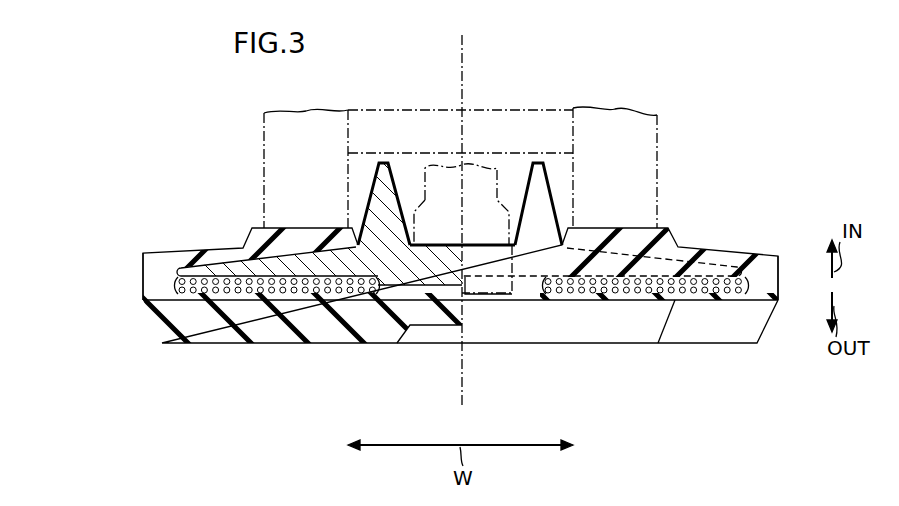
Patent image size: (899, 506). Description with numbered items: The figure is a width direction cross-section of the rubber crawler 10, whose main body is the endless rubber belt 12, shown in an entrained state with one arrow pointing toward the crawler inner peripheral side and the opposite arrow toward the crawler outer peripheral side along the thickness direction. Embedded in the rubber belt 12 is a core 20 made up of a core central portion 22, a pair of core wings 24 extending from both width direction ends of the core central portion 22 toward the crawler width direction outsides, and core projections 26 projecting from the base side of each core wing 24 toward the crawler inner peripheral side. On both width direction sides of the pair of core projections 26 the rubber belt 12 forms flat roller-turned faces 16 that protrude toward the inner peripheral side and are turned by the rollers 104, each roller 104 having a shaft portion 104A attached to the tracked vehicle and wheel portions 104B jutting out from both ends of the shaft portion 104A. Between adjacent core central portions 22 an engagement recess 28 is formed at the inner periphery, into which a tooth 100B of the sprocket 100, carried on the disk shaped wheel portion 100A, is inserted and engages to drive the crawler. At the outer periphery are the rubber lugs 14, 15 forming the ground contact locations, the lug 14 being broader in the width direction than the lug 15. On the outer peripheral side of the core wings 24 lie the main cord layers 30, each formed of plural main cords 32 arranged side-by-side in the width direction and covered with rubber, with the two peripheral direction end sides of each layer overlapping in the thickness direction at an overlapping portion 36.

The rubber crawler 10 is at (226, 224).
The rubber belt 12 is at (779, 259).
The lug 14 is at (318, 344).
The lug 15 is at (665, 344).
The roller-turned face 16 is at (272, 228).
The core 20 is at (418, 299).
The core central portion 22 is at (444, 245).
The core wing 24 is at (215, 248).
The core projection 26 is at (373, 187).
The engagement recess 28 is at (478, 292).
The main cord layer 30 is at (462, 356).
The main cord 32 is at (192, 294).
The overlapping portion 36 is at (175, 285).
The sprocket 100 is at (421, 173).
The wheel portion 100A is at (513, 170).
The tooth 100B is at (480, 300).
The roller 104 is at (659, 117).
The shaft portion 104A is at (553, 108).
The wheel portion 104B is at (658, 137).